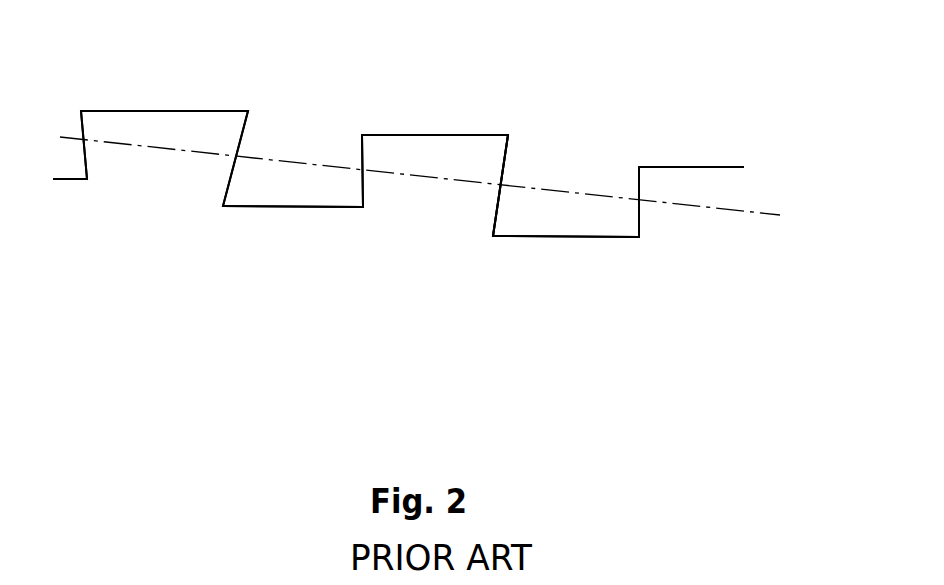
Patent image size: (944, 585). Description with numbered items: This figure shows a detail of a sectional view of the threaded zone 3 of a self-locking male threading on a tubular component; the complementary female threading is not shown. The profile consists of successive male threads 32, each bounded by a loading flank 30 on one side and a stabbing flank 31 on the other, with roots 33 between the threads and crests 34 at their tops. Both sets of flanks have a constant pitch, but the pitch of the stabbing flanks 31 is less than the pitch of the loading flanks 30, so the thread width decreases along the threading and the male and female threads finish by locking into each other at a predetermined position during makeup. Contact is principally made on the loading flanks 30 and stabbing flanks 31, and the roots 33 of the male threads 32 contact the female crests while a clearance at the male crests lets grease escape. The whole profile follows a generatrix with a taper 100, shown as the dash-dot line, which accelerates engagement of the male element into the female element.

The male threading 3 is at (256, 224).
The loading flank 30 is at (365, 192).
The stabbing flank 31 is at (503, 165).
The male thread 32 is at (153, 130).
The root of the male thread 33 is at (302, 208).
The tooth tip 34 is at (200, 110).
The taper 100 is at (760, 208).